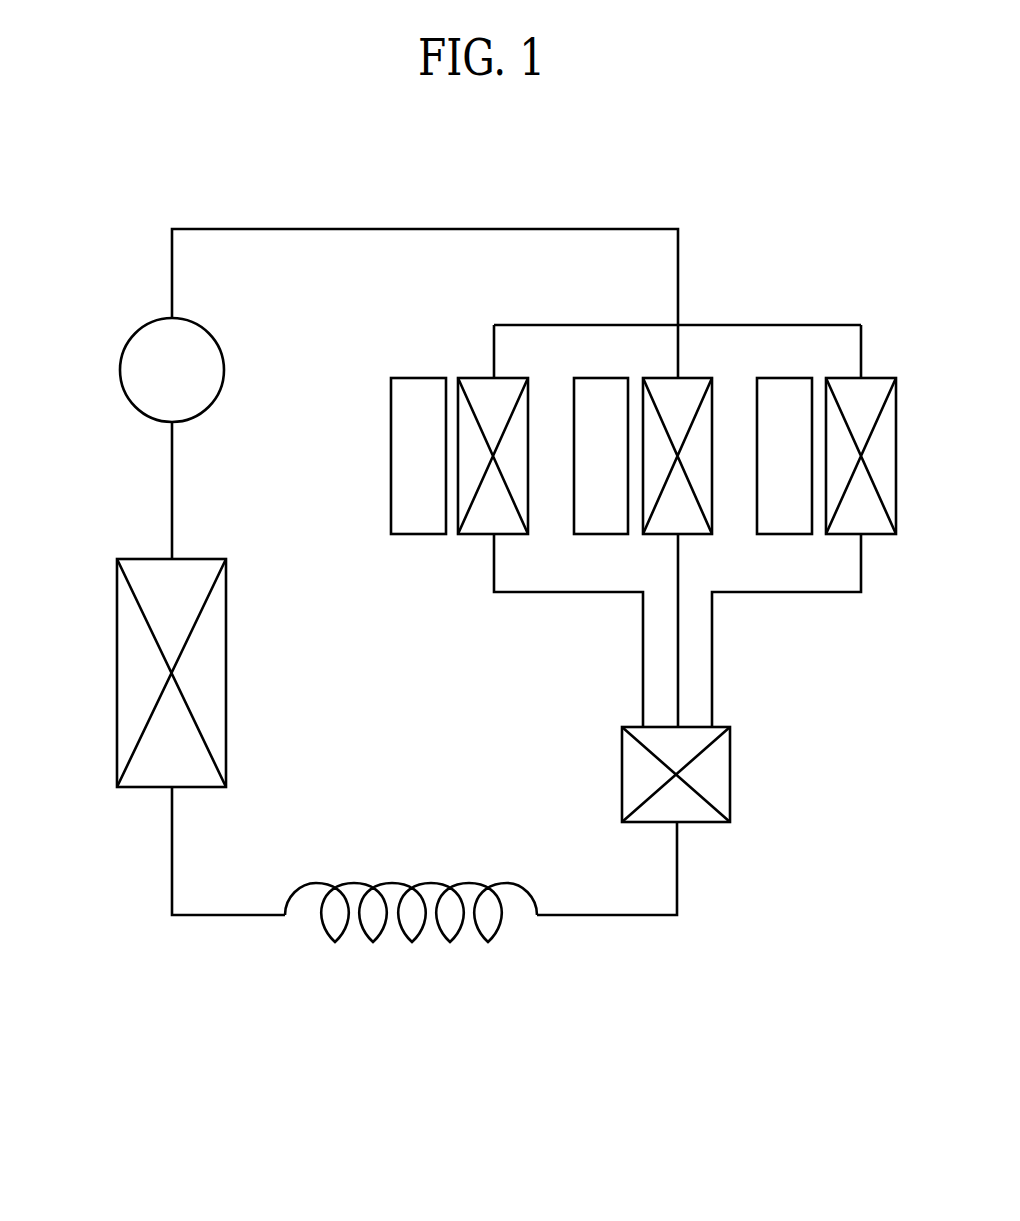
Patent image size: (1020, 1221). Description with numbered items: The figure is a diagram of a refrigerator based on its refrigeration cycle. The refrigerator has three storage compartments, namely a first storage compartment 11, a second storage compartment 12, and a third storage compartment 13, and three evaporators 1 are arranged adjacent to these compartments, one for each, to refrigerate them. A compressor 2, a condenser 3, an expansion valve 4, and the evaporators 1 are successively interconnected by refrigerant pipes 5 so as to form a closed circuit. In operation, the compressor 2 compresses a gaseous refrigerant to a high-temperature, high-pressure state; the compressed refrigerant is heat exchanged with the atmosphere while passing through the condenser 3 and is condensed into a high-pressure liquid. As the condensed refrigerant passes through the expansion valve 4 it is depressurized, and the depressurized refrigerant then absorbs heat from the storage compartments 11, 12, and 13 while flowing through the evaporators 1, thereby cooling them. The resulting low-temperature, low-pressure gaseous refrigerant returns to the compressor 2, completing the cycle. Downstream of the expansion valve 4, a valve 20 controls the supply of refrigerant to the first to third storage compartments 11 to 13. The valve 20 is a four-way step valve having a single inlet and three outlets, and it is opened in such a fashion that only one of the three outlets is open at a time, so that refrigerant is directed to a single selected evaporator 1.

The evaporators 1 is at (475, 382).
The compressor 2 is at (148, 333).
The condenser 3 is at (122, 665).
The expansion valve 4 is at (412, 942).
The refrigerant pipes 5 is at (228, 918).
The first storage compartment 11 is at (393, 397).
The second storage compartment 12 is at (591, 387).
The third storage compartment 13 is at (787, 388).
The valve 20 is at (730, 776).